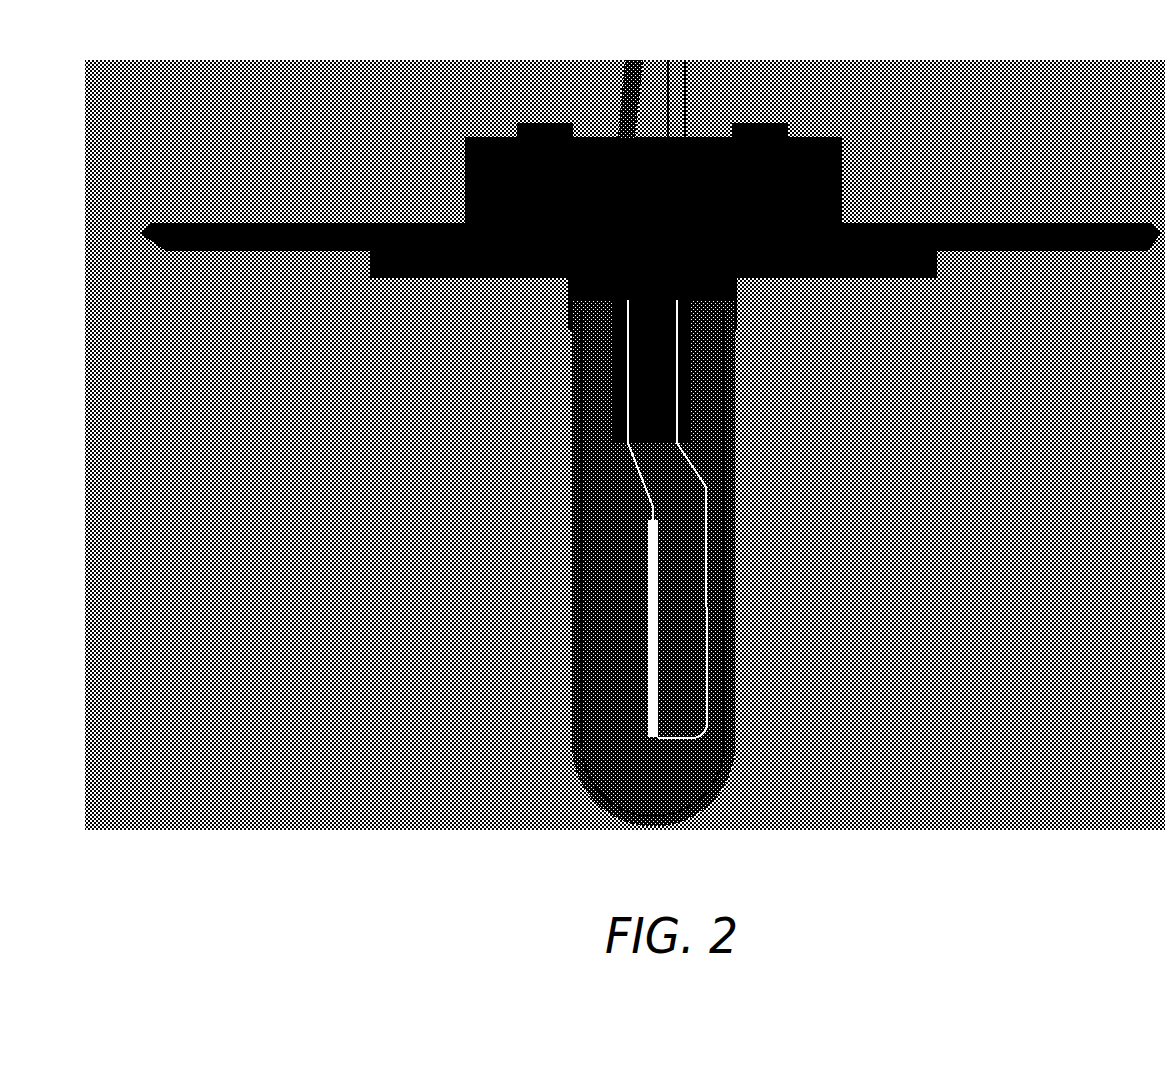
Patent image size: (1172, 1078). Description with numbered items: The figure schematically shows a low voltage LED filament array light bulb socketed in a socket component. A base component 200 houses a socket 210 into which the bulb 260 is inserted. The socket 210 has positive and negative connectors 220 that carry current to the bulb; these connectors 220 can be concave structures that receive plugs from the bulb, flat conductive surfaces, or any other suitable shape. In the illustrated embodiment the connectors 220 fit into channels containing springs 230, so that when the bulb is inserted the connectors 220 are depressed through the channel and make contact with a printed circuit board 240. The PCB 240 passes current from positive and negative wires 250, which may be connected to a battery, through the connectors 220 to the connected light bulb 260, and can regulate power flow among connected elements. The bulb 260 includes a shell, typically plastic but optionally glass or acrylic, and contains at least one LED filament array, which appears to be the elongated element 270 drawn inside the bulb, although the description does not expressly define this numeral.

The base component 200 is at (307, 232).
The socket 210 is at (753, 253).
The positive and negative connectors 220 is at (645, 190).
The springs 230 is at (600, 157).
The printed circuit board (PCB) 240 is at (563, 130).
The positive and negative wires 250 is at (625, 80).
The light bulb 260 is at (723, 500).
The sensor element 270 is at (650, 630).